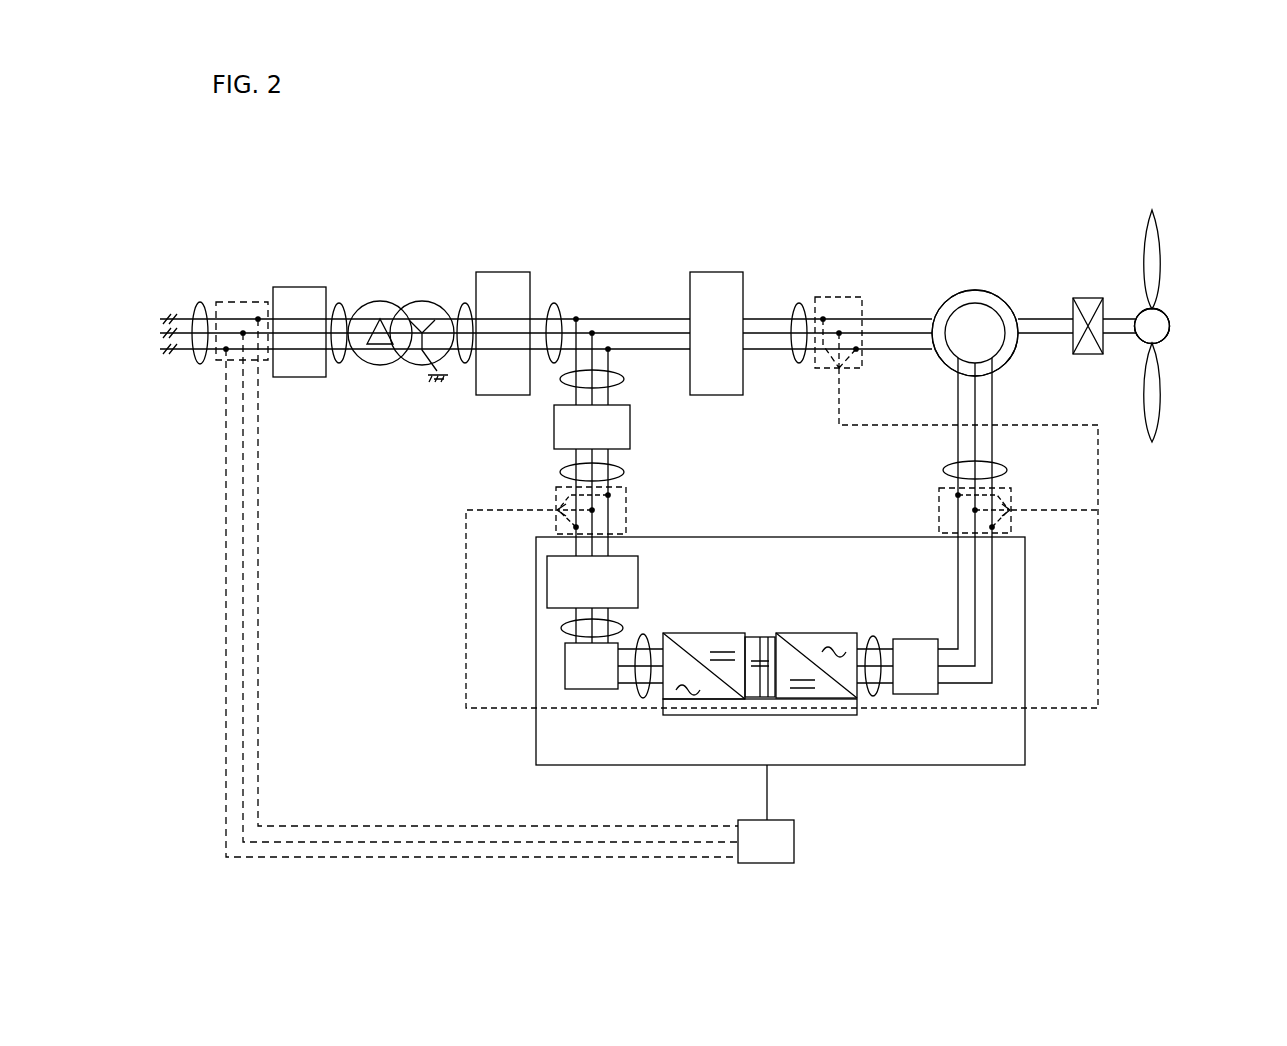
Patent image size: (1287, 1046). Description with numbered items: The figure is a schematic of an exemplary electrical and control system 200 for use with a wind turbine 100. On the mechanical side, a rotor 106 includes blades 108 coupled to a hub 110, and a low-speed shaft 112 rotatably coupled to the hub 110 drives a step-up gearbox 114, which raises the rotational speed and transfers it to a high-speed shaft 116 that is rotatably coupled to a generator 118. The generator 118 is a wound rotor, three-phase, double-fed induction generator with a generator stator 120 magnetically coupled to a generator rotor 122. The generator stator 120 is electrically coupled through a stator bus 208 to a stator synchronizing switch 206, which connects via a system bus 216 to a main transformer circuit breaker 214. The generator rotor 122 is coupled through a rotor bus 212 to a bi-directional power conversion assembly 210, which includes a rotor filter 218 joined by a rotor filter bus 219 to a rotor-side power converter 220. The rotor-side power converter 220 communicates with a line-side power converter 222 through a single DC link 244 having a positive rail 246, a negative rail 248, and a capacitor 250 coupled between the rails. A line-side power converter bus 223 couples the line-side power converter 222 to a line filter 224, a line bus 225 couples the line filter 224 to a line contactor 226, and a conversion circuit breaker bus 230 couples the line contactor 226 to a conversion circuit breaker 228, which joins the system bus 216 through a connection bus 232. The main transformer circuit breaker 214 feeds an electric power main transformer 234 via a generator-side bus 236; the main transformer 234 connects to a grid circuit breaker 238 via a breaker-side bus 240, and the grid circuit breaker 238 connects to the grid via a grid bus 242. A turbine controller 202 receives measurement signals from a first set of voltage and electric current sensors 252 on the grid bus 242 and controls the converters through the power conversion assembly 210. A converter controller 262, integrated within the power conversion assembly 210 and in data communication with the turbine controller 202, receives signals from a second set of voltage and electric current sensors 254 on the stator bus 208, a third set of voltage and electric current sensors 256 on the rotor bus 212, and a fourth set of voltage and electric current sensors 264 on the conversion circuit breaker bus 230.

The wind turbine 100 is at (1138, 193).
The rotor 106 is at (1176, 305).
The blades 108 is at (1163, 262).
The hub 110 is at (1172, 328).
The low-speed shaft 112 is at (1116, 319).
The step-up gearbox 114 is at (1085, 298).
The high-speed shaft 116 is at (1044, 319).
The generator 118 is at (978, 258).
The generator stator 120 is at (973, 296).
The generator rotor 122 is at (967, 313).
The electrical and control system 200 is at (250, 177).
The turbine controller 202 is at (766, 841).
The stator synchronizing switch 206 is at (718, 272).
The stator bus 208 is at (799, 303).
The power conversion assembly 210 is at (1025, 645).
The rotor bus 212 is at (1007, 471).
The main transformer circuit breaker 214 is at (503, 272).
The system bus 216 is at (554, 303).
The rotor filter 218 is at (912, 648).
The rotor filter bus 219 is at (873, 636).
The rotor-side power converter 220 is at (857, 699).
The line-side power converter 222 is at (663, 699).
The line-side power converter bus 223 is at (645, 634).
The line filter 224 is at (565, 666).
The line bus 225 is at (562, 628).
The line contactor 226 is at (547, 580).
The conversion circuit breaker 228 is at (630, 426).
The conversion circuit breaker bus 230 is at (623, 472).
The connection bus 232 is at (624, 380).
The electric power main transformer 234 is at (422, 301).
The generator-side bus 236 is at (465, 303).
The grid circuit breaker 238 is at (291, 287).
The breaker-side bus 240 is at (339, 303).
The grid bus 242 is at (200, 302).
The DC link 244 is at (745, 593).
The positive rail 246 is at (770, 637).
The negative rail 248 is at (770, 699).
The capacitor 250 is at (757, 658).
The first set of voltage and electric current sensors 252 is at (216, 372).
The second set of voltage and electric current sensors 254 is at (852, 292).
The third set of voltage and electric current sensors 256 is at (930, 507).
The converter controller 262 is at (818, 708).
The fourth set of voltage and electric current sensors 264 is at (640, 505).